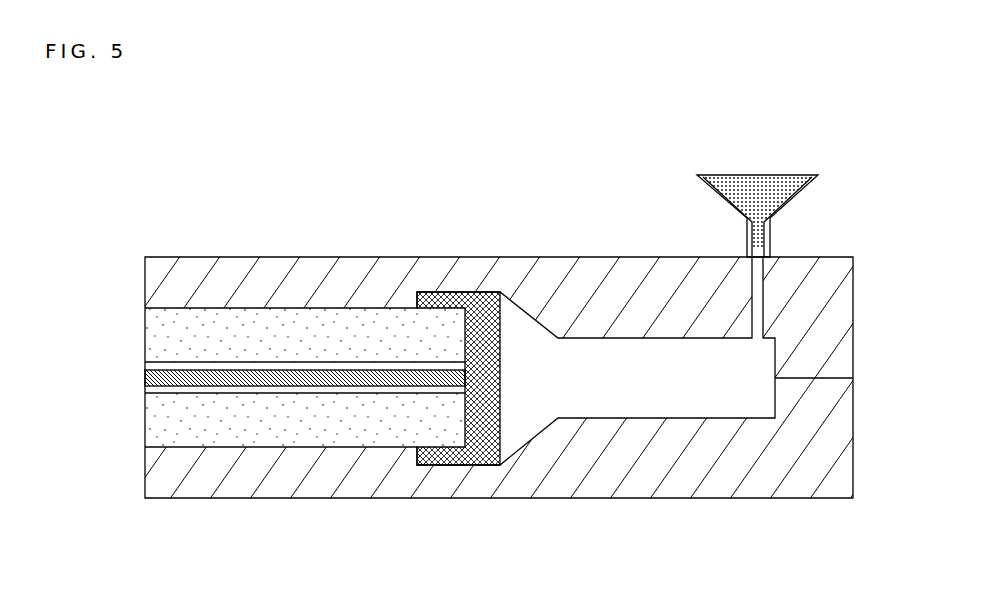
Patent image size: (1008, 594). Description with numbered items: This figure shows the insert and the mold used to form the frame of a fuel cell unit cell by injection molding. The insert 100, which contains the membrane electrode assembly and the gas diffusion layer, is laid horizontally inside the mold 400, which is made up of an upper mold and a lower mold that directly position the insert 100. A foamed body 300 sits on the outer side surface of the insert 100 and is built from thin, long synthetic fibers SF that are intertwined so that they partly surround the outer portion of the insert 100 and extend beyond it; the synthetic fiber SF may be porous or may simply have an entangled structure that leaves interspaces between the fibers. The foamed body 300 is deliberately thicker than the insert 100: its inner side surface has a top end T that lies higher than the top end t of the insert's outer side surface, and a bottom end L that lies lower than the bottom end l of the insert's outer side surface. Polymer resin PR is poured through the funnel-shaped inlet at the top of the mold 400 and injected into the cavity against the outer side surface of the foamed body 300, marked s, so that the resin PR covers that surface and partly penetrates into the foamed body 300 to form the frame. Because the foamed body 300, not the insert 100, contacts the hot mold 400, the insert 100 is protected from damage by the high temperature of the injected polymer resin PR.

The insert 100 is at (256, 379).
The foamed body 300 is at (456, 291).
The mold 400 is at (830, 272).
The polymer resin PR is at (755, 182).
The synthetic fiber SF is at (437, 292).
The top end of the inner side surface of the foamed body T is at (432, 318).
The top end of the outer side surface of the insert t is at (345, 308).
The bottom end of the outer side surface of the insert l is at (500, 350).
The bottom end of the inner side surface of the foamed body L is at (432, 439).
The gap s is at (501, 422).